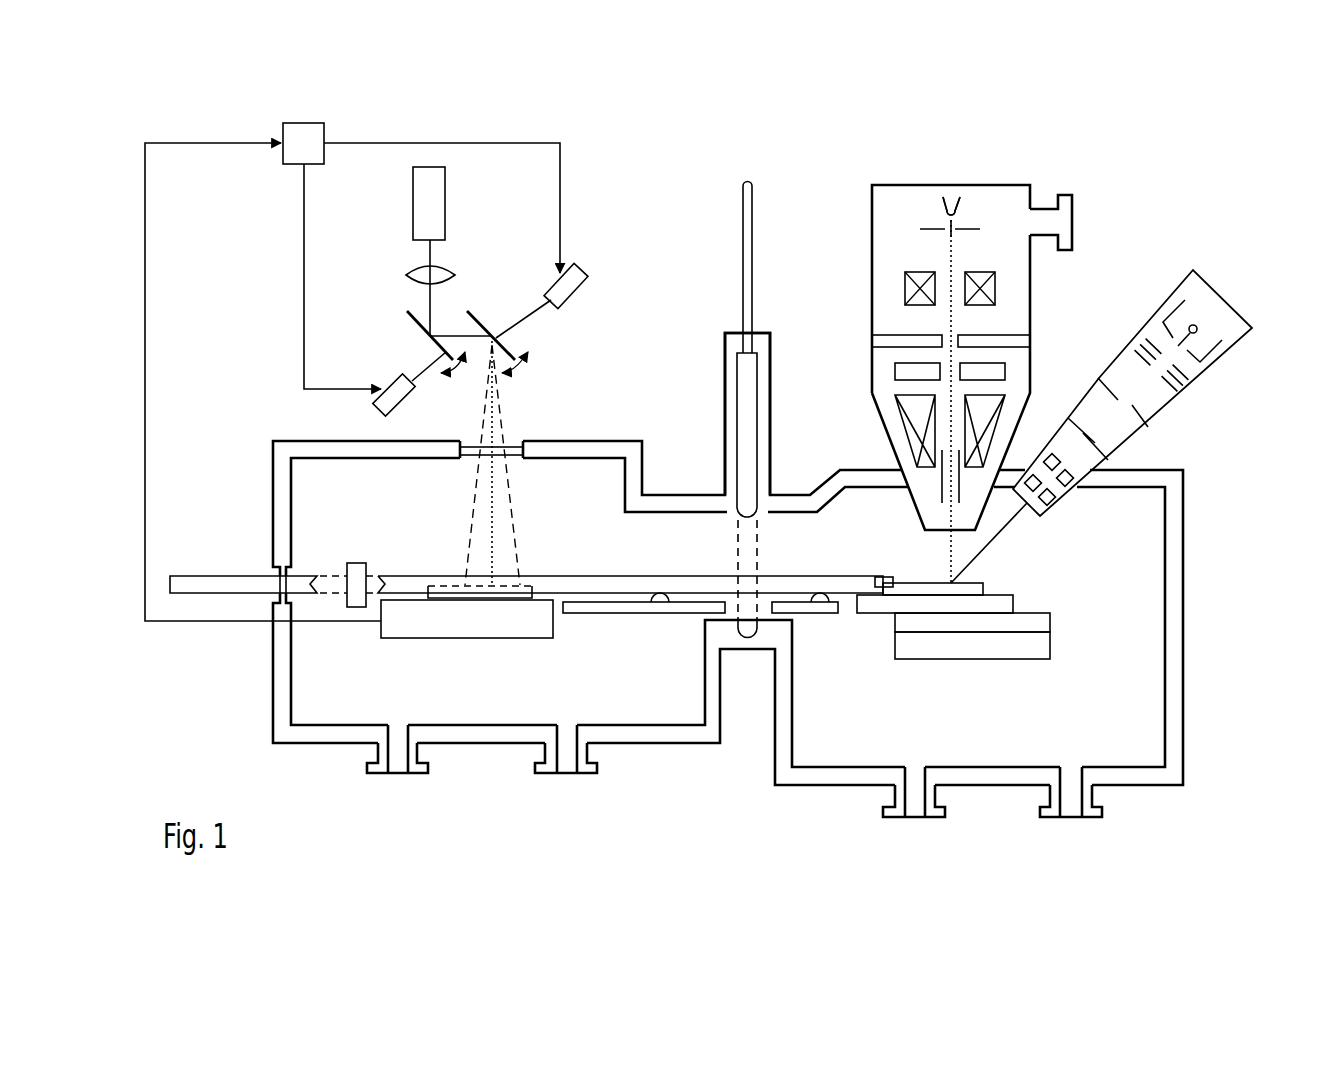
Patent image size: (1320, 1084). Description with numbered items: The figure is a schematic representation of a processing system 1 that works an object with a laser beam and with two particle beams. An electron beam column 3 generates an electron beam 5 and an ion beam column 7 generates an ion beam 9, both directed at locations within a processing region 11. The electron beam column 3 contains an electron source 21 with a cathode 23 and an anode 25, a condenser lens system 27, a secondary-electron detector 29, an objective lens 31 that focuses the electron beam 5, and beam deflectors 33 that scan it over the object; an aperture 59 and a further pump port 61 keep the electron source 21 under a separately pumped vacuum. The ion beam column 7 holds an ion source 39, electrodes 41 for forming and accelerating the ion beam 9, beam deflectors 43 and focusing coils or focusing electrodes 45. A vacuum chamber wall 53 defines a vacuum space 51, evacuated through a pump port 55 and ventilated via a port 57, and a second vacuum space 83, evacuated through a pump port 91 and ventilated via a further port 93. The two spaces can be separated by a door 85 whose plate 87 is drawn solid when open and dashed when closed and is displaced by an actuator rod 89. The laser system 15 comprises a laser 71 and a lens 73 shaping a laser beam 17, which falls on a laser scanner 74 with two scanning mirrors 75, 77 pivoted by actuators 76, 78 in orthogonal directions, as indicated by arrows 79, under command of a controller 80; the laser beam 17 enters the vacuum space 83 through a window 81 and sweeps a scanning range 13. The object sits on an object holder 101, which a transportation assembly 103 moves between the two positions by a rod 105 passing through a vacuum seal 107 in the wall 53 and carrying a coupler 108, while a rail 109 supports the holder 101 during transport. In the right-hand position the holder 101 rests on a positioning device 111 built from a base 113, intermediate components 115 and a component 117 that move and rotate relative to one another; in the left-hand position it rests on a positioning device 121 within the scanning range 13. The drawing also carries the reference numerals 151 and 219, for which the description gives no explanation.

The processing system 1 is at (1185, 212).
The electron beam column 3 is at (872, 196).
The electron beam 5 is at (953, 320).
The ion beam column 7 is at (1250, 335).
The ion beam 9 is at (1025, 525).
The processing region 11 is at (945, 578).
The scanning range 13 is at (457, 556).
The laser system 15 is at (590, 207).
The laser beam 17 is at (497, 488).
The electron source 21 is at (970, 205).
The cathode 23 is at (947, 195).
The anode 25 is at (933, 228).
The condenser lens system 27 is at (905, 290).
The secondary-electron detector 29 is at (895, 370).
The objective lens 31 is at (897, 408).
The beam deflectors 33 is at (942, 490).
The ion source 39 is at (1213, 322).
The electrodes 41 is at (1180, 394).
The beam deflectors 43 is at (1105, 440).
The focusing coils or focusing electrodes 45 is at (1040, 465).
The vacuum space 51 is at (1112, 729).
The vacuum chamber wall 53 is at (273, 478).
The pump port 55 is at (945, 812).
The port 57 is at (1102, 812).
The aperture 59 is at (1030, 340).
The further pump port 61 is at (1072, 213).
The laser 71 is at (413, 205).
The lens 73 is at (406, 276).
The laser scanner 74 is at (497, 268).
The scanning mirror 75 is at (405, 323).
The actuator 76 is at (412, 410).
The scanning mirror 77 is at (478, 318).
The actuator 78 is at (588, 290).
The arrows 79 is at (515, 373).
The controller 80 is at (283, 157).
The window 81 is at (470, 445).
The vacuum space 83 is at (349, 698).
The door 85 is at (788, 341).
The plate 87 is at (758, 445).
The actuator rod 89 is at (752, 228).
The pump port 91 is at (428, 770).
The further port 93 is at (597, 770).
The object holder 101 is at (520, 585).
The transportation assembly 103 is at (230, 642).
The rod 105 is at (183, 575).
The vacuum seal 107 is at (283, 575).
The coupler 108 is at (883, 575).
The rail 109 is at (665, 605).
The positioning device 111 is at (1085, 560).
The base 113 is at (1050, 648).
The intermediate components 115 is at (1050, 616).
The component 117 is at (1013, 600).
The positioning device 121 is at (553, 627).
The coupling 151 is at (356, 563).
The control line 219 is at (146, 343).